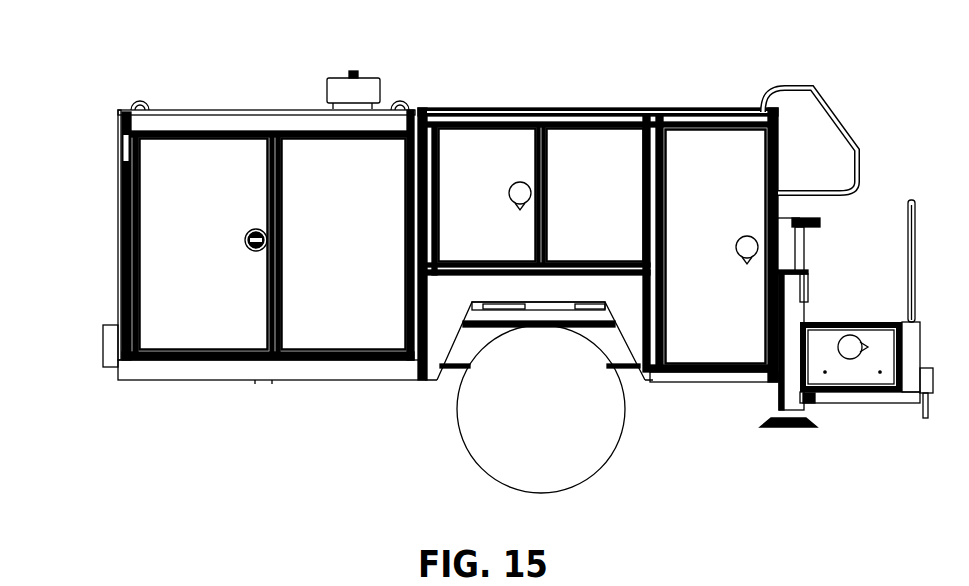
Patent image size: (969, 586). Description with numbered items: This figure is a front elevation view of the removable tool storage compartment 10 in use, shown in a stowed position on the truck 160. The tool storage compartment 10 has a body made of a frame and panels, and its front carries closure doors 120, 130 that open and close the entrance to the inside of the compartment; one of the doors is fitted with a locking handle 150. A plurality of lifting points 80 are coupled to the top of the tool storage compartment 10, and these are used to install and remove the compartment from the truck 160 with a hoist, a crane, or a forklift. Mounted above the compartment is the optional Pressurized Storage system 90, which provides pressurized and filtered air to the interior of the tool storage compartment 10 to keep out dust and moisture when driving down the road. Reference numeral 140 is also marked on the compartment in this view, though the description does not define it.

The tool storage compartment 10 is at (160, 250).
The lifting point 80 is at (141, 102).
The Pressurized Storage system 90 is at (338, 76).
The closure door 120 is at (232, 326).
The closure door 130 is at (368, 326).
The storage compartment 140 is at (158, 185).
The locking handle 150 is at (255, 228).
The truck 160 is at (623, 100).